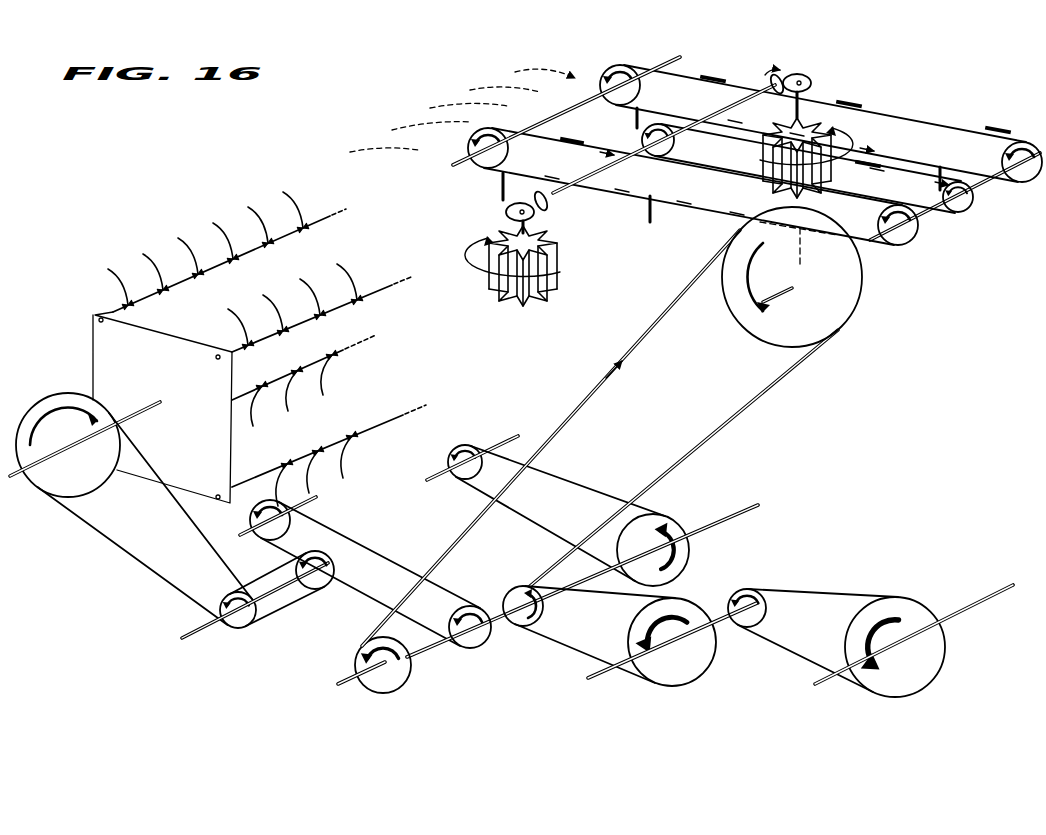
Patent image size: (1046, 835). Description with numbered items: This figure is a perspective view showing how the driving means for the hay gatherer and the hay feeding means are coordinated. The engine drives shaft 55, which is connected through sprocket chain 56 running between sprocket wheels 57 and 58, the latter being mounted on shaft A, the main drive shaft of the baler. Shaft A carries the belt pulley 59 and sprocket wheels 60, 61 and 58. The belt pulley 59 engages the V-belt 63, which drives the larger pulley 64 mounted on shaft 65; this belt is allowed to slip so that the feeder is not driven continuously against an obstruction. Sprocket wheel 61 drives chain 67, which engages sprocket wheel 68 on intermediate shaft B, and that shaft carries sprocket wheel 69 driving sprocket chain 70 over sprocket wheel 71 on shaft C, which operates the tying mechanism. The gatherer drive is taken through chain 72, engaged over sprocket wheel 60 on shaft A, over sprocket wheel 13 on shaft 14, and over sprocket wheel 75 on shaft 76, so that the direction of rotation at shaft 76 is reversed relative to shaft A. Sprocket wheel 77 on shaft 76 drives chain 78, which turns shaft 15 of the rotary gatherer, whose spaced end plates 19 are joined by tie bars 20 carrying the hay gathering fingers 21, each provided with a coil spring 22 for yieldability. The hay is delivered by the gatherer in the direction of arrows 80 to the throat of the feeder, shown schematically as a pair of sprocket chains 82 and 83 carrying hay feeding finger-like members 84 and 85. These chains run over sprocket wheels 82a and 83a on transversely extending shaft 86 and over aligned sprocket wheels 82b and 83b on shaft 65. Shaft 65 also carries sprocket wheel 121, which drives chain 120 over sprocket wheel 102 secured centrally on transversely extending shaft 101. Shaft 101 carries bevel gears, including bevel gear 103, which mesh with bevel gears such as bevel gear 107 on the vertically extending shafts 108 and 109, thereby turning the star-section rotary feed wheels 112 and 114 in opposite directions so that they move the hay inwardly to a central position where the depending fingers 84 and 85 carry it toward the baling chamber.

The pulley 13 is at (273, 538).
The pivot 14 is at (303, 511).
The gatherer shaft 15 is at (12, 478).
The end plates 19 is at (173, 348).
The tie bars 20 is at (296, 228).
The hay gathering fingers 21 is at (125, 282).
The coil spring 22 is at (282, 327).
The shaft 55 is at (503, 421).
The sprocket chain 56 is at (580, 485).
The sprocket wheel 57 is at (468, 477).
The sprocket wheel 58 is at (659, 527).
The belt pulley 59 is at (389, 693).
The sprocket wheel 60 is at (478, 646).
The sprocket wheel 61 is at (543, 614).
The V-belt 63 is at (589, 403).
The larger pulley 64 is at (760, 324).
The shaft 65 is at (872, 250).
The chain 67 is at (573, 653).
The sprocket wheel 68 is at (695, 669).
The sprocket wheel 69 is at (755, 603).
The sprocket chain 70 is at (820, 591).
The sprocket wheel 71 is at (907, 610).
The chain 72 is at (365, 582).
The sprocket wheel 75 is at (312, 589).
The shaft 76 is at (192, 637).
The sprocket wheel 77 is at (235, 632).
The chain 78 is at (127, 557).
The arrows 80 is at (467, 95).
The sprocket chain 82 is at (687, 75).
The sprocket wheel 82a is at (628, 67).
The sprocket wheel 82b is at (1026, 142).
The sprocket chain 83 is at (550, 137).
The sprocket wheel 83a is at (463, 174).
The sprocket wheel 83b is at (905, 244).
The hay feeding finger-like members 84 is at (644, 120).
The hay feeding finger-like members 85 is at (507, 172).
The transversely extending shaft 86 is at (668, 60).
The transversely extending shaft 101 is at (724, 104).
The sprocket wheel 102 is at (676, 140).
The bevel gear 103 is at (543, 193).
The bevel gear 107 is at (545, 210).
The vertically extending shaft 108 is at (553, 228).
The vertically extending shaft 109 is at (813, 100).
The rotary feed wheel 112 is at (546, 288).
The rotary feed wheel 114 is at (810, 104).
The chain 120 is at (907, 170).
The sprocket wheel 121 is at (964, 204).
The shaft A is at (347, 688).
The intermediate shaft B is at (606, 674).
The shaft C is at (822, 686).